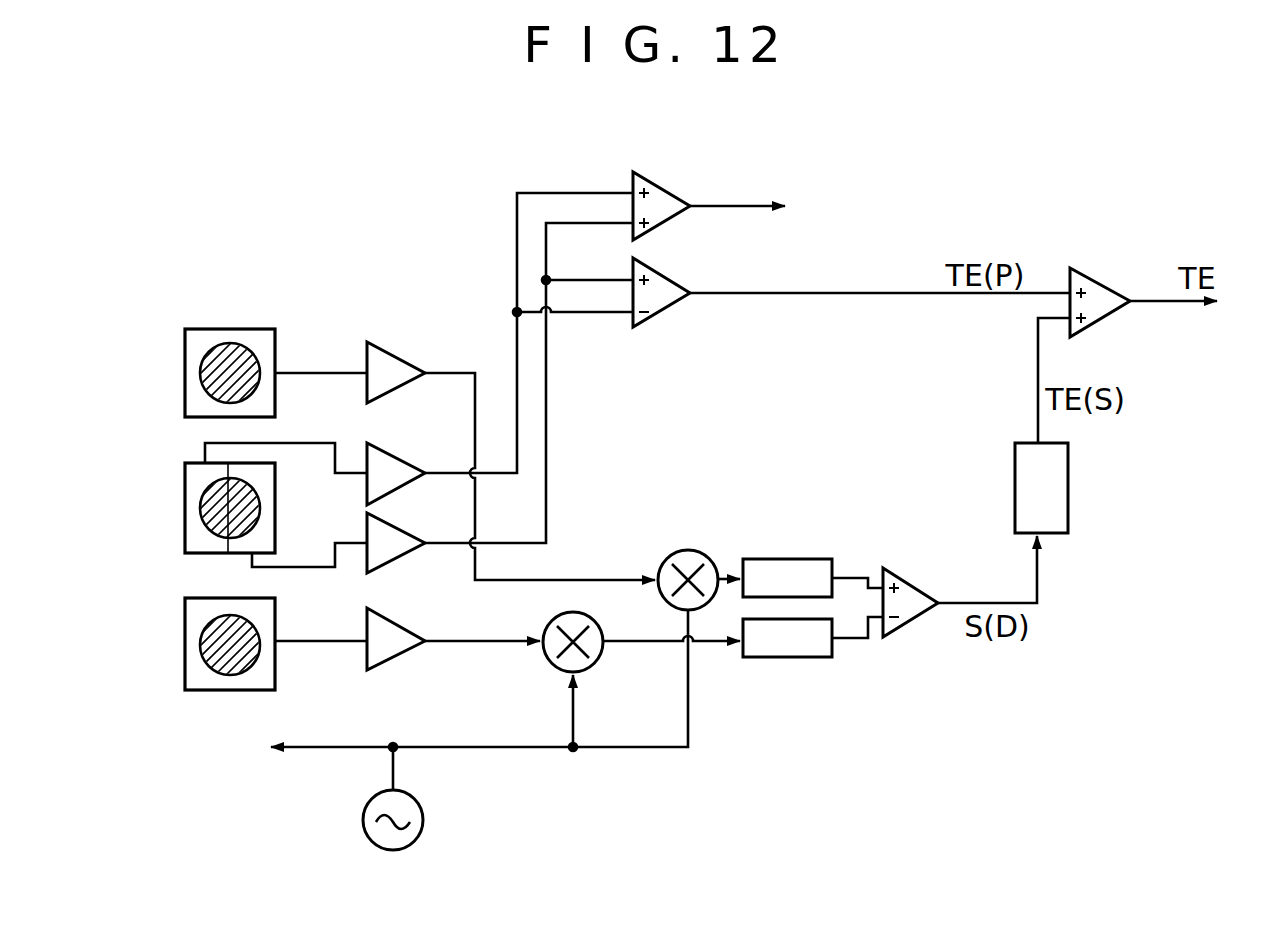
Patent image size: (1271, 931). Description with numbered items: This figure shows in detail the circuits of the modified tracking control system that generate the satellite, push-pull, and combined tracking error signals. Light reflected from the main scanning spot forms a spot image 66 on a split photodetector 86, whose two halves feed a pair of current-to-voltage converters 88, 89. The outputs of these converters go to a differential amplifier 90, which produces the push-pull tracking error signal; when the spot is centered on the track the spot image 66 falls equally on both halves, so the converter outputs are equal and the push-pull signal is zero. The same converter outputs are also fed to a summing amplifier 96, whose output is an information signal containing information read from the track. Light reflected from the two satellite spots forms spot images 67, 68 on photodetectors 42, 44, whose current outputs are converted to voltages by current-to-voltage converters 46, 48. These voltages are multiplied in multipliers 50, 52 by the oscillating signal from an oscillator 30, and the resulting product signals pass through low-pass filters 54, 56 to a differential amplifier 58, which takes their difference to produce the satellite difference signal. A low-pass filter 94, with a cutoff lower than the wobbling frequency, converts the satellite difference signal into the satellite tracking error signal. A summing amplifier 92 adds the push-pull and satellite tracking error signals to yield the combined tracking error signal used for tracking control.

The oscillator 30 is at (423, 837).
The photodetector 42 is at (185, 358).
The photodetector 44 is at (185, 641).
The current-to-voltage converter 46 is at (397, 360).
The current-to-voltage converter 48 is at (401, 633).
The multiplier 50 is at (695, 560).
The multiplier 52 is at (553, 661).
The low-pass filter 54 is at (792, 565).
The low-pass filter 56 is at (780, 650).
The differential amplifier 58 is at (902, 573).
The spot image 66 is at (254, 510).
The spot image 67 is at (241, 347).
The spot image 68 is at (217, 674).
The split photodetector 86 is at (185, 521).
The current-to-voltage converter 88 is at (400, 470).
The current-to-voltage converter 89 is at (400, 550).
The differential amplifier 90 is at (665, 285).
The summing amplifier 92 is at (1107, 292).
The low-pass filter 94 is at (1062, 510).
The summing amplifier 96 is at (663, 193).